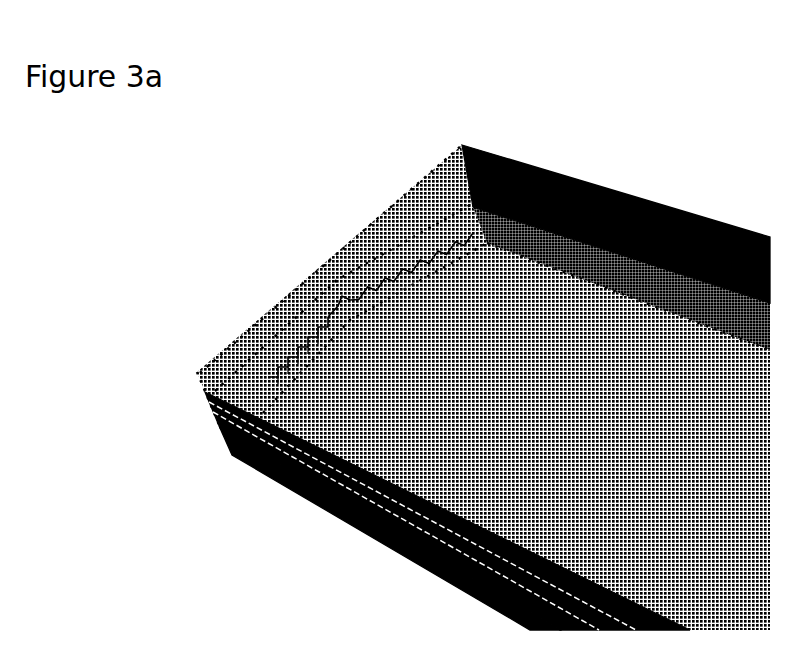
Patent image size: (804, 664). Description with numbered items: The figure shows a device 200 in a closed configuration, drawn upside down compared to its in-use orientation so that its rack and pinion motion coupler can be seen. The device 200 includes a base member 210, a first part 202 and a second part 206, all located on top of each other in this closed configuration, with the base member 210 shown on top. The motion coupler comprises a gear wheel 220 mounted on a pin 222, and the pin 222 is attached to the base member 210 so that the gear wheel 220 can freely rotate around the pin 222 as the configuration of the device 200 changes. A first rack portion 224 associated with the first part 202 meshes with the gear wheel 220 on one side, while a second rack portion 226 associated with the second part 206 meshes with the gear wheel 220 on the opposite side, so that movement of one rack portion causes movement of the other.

The device 200 is at (655, 133).
The first part 202 is at (310, 503).
The second part 206 is at (222, 428).
The base member 210 is at (503, 158).
The gear wheel 220 is at (354, 332).
The pin 222 is at (340, 292).
The first rack portion 224 is at (256, 349).
The second rack portion 226 is at (406, 251).